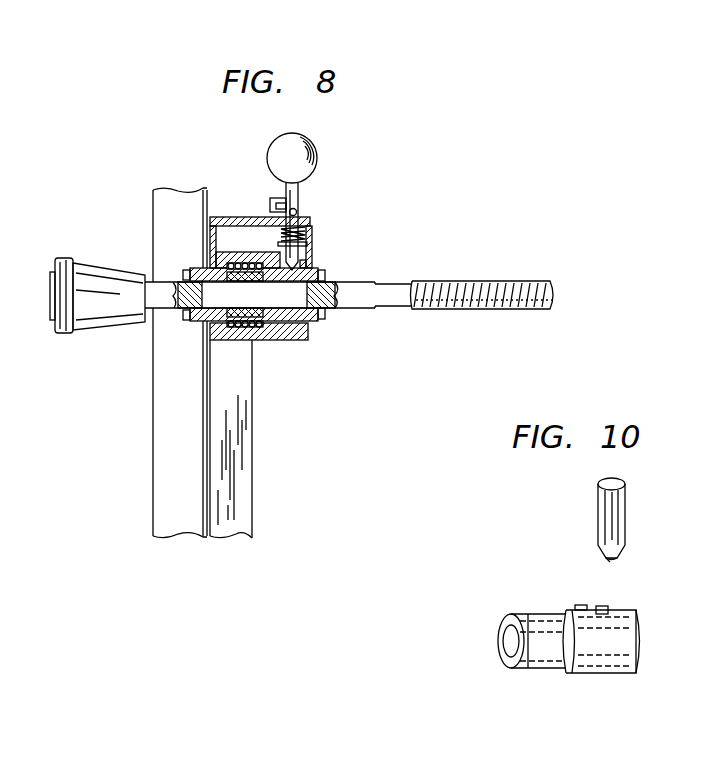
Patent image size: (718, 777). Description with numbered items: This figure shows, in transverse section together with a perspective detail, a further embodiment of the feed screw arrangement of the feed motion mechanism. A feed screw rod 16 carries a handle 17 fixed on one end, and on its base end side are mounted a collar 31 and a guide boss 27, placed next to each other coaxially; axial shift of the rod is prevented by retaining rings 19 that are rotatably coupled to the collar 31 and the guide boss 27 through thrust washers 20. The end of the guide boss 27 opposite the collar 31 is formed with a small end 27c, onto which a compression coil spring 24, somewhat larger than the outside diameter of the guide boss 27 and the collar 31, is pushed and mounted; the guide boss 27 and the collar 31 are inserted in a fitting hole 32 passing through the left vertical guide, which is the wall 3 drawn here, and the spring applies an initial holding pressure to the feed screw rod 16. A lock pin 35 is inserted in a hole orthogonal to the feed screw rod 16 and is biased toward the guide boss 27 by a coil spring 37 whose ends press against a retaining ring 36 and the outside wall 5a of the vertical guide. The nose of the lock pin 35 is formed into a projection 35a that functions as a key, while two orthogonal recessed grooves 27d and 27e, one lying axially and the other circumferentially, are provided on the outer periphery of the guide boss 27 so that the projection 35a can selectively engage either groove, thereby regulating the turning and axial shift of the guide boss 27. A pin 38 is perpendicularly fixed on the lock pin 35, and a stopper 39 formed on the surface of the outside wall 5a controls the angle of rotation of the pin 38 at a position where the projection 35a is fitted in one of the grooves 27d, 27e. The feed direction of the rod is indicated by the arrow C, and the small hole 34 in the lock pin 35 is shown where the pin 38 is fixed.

In FIG. 8, the wall 3 is at (151, 437).
In FIG. 8, the outside wall 5a is at (232, 222).
In FIG. 8, the feed screw rod 16 is at (506, 281).
In FIG. 8, the handle 17 is at (83, 263).
In FIG. 8, the retaining rings 19 is at (178, 275).
In FIG. 8, the thrust washers 20 is at (186, 269).
In FIG. 8, the compression coil spring 24 is at (253, 341).
In FIG. 8, the guide boss 27 is at (283, 341).
In FIG. 10, the guide boss 27 is at (604, 618).
In FIG. 10, the small end 27c is at (530, 614).
In FIG. 10, the recessed groove 27d is at (576, 607).
In FIG. 10, the recessed groove 27e is at (601, 608).
In FIG. 8, the collar 31 is at (198, 324).
In FIG. 8, the fitting hole 32 is at (310, 340).
In FIG. 8, the hole 34 is at (300, 212).
In FIG. 8, the lock pin 35 is at (299, 195).
In FIG. 10, the lock pin 35 is at (626, 505).
In FIG. 10, the projection 35a is at (617, 556).
In FIG. 8, the retaining ring 36 is at (309, 245).
In FIG. 8, the coil spring 37 is at (310, 232).
In FIG. 8, the pin 38 is at (272, 203).
In FIG. 8, the stopper 39 is at (283, 197).
In FIG. 8, the direction arrow C is at (425, 271).